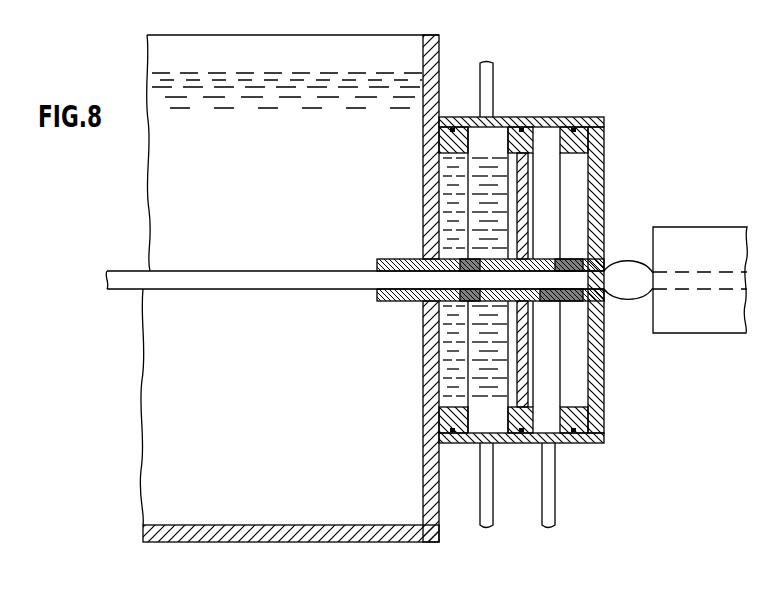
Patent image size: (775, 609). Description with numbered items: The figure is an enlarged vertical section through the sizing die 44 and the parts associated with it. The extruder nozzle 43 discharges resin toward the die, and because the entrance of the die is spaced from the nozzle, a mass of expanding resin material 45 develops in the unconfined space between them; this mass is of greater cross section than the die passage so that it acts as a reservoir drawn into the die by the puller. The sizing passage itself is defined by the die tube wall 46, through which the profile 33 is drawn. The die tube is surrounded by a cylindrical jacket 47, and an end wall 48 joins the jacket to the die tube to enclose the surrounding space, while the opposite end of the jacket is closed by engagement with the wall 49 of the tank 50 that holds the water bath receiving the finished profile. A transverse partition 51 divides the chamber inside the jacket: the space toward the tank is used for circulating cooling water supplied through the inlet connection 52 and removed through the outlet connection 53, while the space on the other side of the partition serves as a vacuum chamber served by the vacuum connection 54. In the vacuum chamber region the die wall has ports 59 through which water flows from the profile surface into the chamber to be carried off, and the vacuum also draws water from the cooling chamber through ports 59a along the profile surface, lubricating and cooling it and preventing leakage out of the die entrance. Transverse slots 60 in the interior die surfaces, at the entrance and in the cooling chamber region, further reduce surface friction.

The shaft 33 is at (170, 262).
The extruder nozzle 43 is at (710, 227).
The sizing die 44 is at (454, 110).
The mass of expanding resin material 45 is at (622, 258).
The die tube wall 46 is at (536, 301).
The cylindrical jacket 47 is at (568, 443).
The end wall 48 is at (604, 140).
The tank wall 49 is at (433, 500).
The tank 50 is at (160, 525).
The transverse partition 51 is at (528, 167).
The inlet connection 52 is at (490, 66).
The outlet connection 53 is at (494, 481).
The vacuum connection 54 is at (557, 481).
The ports 59 is at (576, 259).
The ports 59a is at (448, 259).
The transverse slots 60 is at (480, 301).